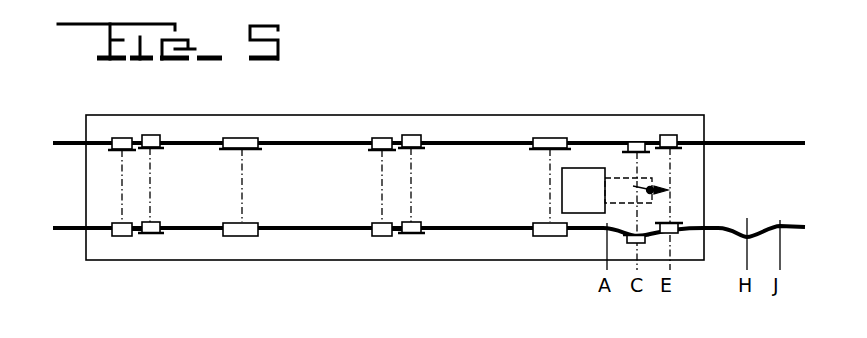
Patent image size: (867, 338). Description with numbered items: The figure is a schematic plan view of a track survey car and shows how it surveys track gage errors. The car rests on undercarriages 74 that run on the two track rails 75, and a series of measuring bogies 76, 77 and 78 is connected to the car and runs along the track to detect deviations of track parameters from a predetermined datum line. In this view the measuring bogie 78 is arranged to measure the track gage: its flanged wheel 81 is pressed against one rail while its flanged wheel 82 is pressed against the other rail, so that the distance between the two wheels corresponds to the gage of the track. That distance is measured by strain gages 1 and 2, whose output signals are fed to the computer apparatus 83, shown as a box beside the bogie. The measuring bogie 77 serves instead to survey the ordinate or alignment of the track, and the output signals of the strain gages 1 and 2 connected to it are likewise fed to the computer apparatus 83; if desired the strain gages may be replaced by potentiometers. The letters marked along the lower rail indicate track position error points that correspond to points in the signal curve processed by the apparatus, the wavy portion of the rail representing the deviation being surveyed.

The strain gage 1 is at (633, 192).
The strain gage 2 is at (633, 188).
The undercarriage 74 is at (244, 226).
The track rail 75 is at (80, 226).
The measuring bogie 76 is at (141, 245).
The measuring bogie 77 is at (404, 246).
The measuring bogie 78 is at (645, 130).
The flanged wheel 81 is at (668, 135).
The flanged wheel 82 is at (634, 244).
The computer apparatus 83 is at (592, 182).